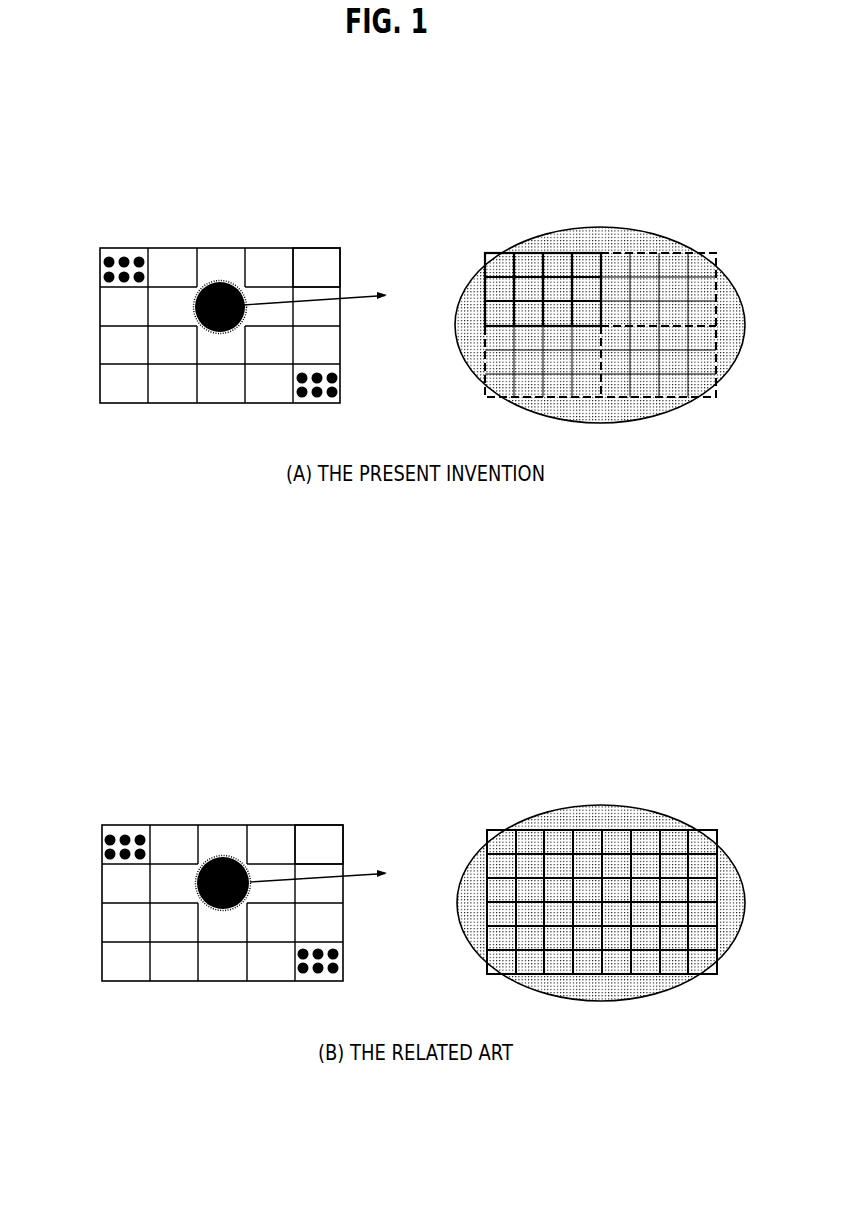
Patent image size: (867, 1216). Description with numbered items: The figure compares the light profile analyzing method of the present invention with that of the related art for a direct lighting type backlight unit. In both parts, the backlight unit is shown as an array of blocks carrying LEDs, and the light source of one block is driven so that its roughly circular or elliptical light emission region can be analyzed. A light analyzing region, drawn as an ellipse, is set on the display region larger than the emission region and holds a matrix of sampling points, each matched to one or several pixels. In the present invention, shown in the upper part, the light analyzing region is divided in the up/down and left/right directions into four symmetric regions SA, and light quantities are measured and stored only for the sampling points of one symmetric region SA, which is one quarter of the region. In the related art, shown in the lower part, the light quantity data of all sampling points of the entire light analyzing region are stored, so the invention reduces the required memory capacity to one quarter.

The symmetric region SA is at (717, 278).